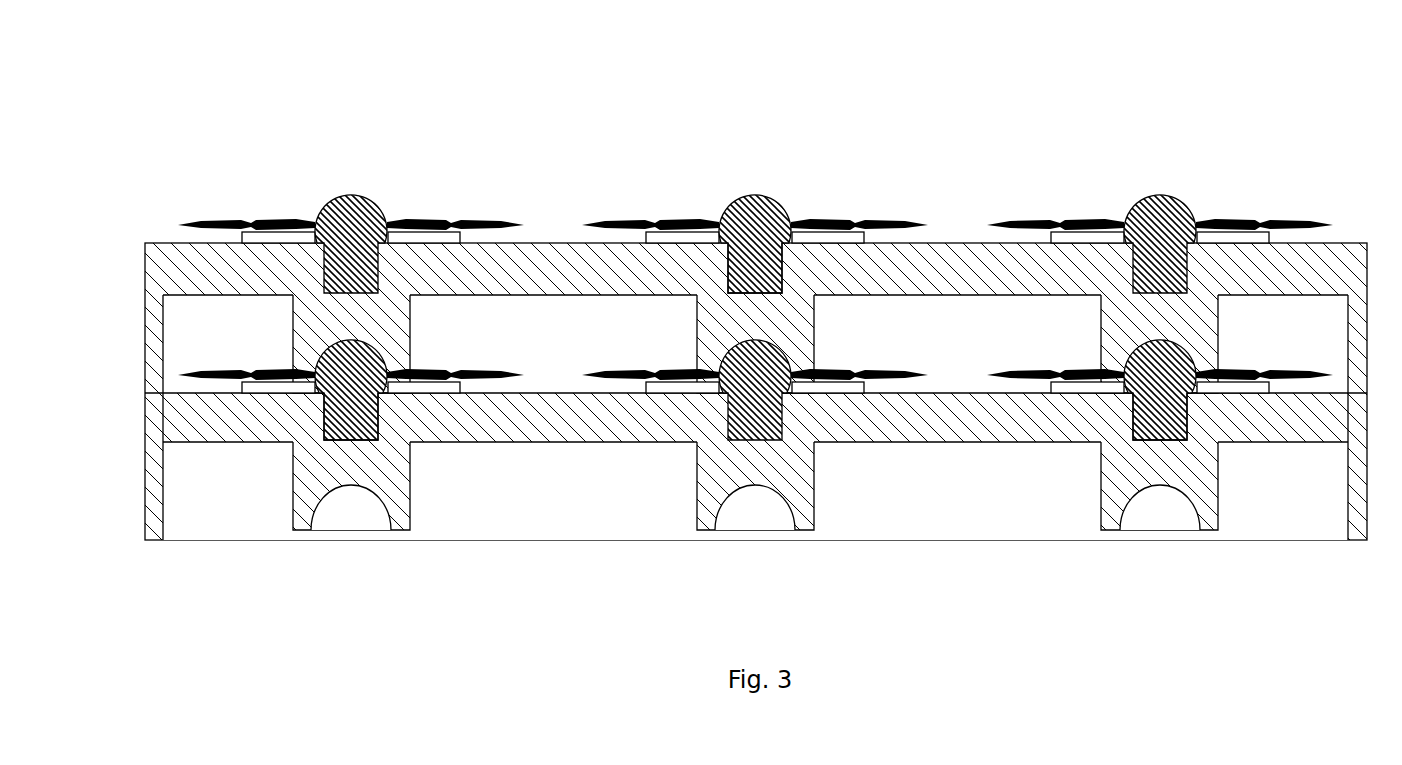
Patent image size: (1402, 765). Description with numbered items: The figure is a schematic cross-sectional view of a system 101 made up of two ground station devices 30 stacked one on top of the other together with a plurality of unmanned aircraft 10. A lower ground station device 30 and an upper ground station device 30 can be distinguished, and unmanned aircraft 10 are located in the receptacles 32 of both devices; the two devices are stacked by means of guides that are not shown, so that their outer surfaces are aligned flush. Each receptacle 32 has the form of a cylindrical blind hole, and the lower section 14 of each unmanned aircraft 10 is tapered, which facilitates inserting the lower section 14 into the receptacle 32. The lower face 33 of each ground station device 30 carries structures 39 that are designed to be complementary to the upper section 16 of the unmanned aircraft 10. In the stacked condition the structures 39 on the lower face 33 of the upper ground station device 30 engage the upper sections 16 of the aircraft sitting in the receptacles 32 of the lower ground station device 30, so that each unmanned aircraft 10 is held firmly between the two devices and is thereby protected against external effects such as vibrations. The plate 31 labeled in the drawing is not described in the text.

The unmanned aircraft 10 is at (338, 195).
The lower section 14 is at (1133, 432).
The upper section 16 is at (362, 203).
The ground station device 30 is at (155, 302).
The upper plate 31 is at (538, 245).
The receptacle 32 is at (782, 272).
The lower face 33 is at (930, 295).
The structure 39 is at (732, 345).
The system 101 is at (701, 337).